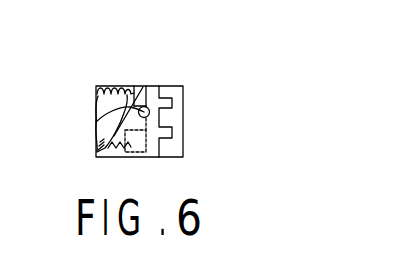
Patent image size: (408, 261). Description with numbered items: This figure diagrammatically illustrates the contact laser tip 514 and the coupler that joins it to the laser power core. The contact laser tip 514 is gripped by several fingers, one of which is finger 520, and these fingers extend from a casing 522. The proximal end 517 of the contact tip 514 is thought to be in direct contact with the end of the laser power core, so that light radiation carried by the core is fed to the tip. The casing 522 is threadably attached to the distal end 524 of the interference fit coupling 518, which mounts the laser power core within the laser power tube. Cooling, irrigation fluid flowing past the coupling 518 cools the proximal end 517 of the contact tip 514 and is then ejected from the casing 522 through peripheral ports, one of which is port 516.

The contact laser tip 514 is at (183, 86).
The output port 516 is at (150, 113).
The proximal end 517 is at (96, 122).
The interference fit coupling 518 is at (100, 87).
The finger 520 is at (173, 86).
The casing 522 is at (135, 157).
The distal end 524 is at (134, 86).